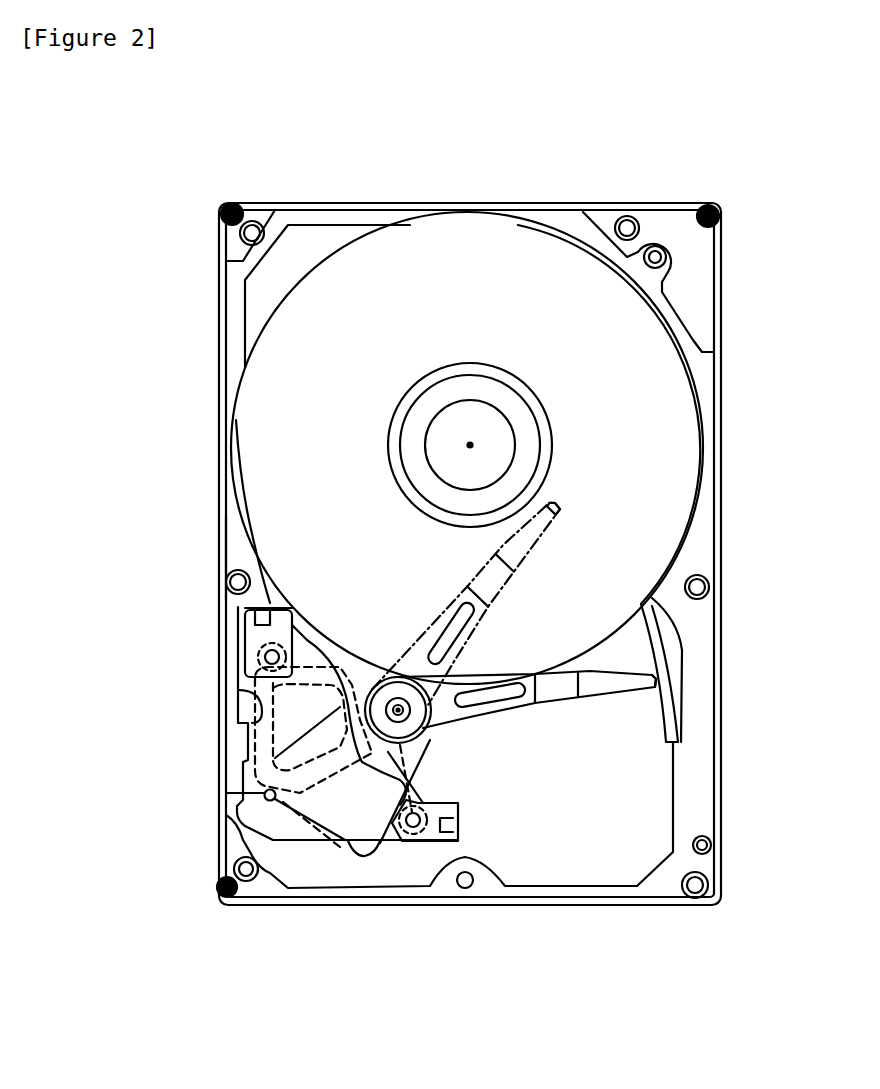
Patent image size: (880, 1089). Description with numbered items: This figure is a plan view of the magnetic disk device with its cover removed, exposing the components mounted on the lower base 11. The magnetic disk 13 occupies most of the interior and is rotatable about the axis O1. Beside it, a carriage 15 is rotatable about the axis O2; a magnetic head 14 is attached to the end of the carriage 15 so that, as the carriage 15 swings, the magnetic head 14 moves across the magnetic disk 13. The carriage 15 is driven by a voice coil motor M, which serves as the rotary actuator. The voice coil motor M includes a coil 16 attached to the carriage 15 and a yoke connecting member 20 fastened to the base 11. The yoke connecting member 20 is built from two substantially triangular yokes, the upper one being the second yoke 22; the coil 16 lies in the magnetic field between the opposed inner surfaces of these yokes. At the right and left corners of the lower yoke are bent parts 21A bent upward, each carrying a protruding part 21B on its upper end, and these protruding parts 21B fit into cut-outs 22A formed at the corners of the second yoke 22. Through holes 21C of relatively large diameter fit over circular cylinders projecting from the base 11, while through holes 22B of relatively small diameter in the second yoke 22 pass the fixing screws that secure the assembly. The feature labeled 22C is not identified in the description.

The lower base 11 is at (723, 461).
The magnetic disk 13 is at (470, 237).
The magnetic head 14 is at (655, 688).
The carriage 15 is at (488, 723).
The coil 16 is at (255, 731).
The yoke connecting member 20 is at (387, 849).
The bent part 21A is at (263, 609).
The protruding part 21B is at (456, 830).
The through hole 21C is at (245, 607).
The second yoke 22 is at (325, 844).
The cut-out 22A is at (456, 822).
The through hole 22B is at (262, 606).
The positioning pin 22C is at (264, 795).
The axis O1 is at (475, 444).
The axis O2 is at (398, 706).
The voice coil motor M is at (332, 647).